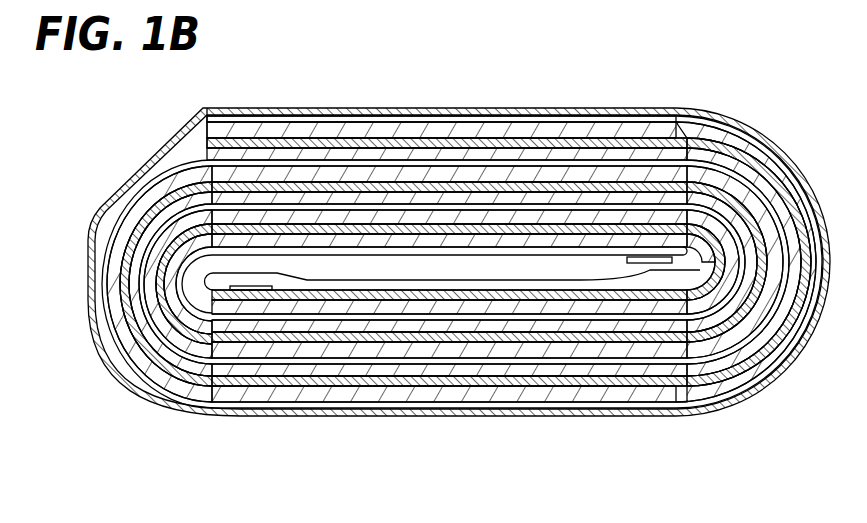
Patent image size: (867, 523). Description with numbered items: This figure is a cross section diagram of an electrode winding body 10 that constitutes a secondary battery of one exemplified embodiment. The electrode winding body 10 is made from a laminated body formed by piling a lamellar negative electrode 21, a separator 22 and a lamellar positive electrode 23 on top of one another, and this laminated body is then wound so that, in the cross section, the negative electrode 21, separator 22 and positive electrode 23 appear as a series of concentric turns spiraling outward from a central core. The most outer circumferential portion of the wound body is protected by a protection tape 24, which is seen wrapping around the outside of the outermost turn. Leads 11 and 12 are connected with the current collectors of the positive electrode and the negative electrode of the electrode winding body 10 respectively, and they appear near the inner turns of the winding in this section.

The electrode winding body 10 is at (478, 418).
The lead 11 is at (648, 263).
The lead 12 is at (243, 290).
The lamellar negative electrode 21 is at (557, 120).
The separator 22 is at (493, 150).
The lamellar positive electrode 23 is at (399, 138).
The protection tape 24 is at (640, 108).